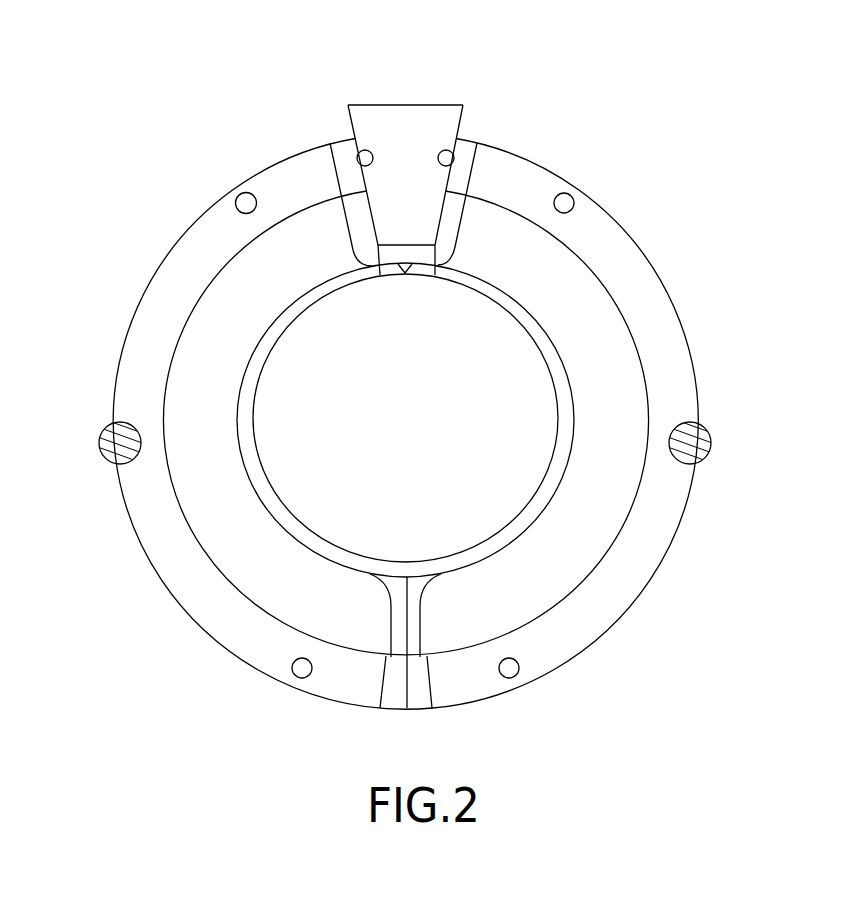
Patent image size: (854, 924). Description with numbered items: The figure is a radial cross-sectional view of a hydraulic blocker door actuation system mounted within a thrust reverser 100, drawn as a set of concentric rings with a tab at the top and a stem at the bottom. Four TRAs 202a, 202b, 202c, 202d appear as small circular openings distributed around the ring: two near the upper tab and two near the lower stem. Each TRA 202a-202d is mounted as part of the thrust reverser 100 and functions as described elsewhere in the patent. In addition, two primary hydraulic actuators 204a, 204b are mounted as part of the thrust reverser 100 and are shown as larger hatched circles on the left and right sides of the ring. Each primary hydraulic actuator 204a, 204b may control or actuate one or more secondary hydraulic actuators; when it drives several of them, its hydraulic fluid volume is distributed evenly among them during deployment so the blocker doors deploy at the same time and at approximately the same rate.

The thrust reverser 100 is at (92, 148).
The TRA 202a is at (244, 194).
The TRA 202b is at (567, 195).
The TRA 202c is at (513, 677).
The TRA 202d is at (299, 677).
The primary hydraulic actuator 204a is at (102, 442).
The primary hydraulic actuator 204b is at (703, 450).